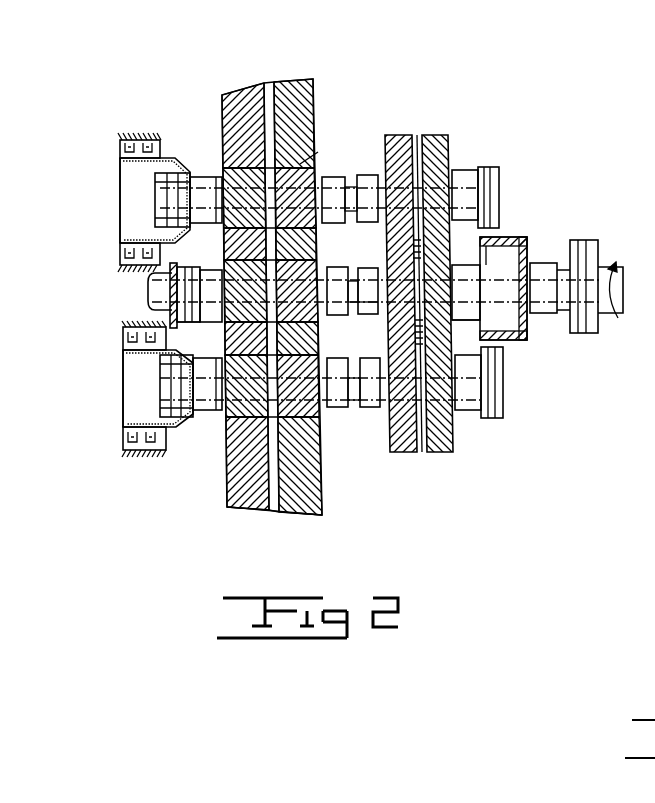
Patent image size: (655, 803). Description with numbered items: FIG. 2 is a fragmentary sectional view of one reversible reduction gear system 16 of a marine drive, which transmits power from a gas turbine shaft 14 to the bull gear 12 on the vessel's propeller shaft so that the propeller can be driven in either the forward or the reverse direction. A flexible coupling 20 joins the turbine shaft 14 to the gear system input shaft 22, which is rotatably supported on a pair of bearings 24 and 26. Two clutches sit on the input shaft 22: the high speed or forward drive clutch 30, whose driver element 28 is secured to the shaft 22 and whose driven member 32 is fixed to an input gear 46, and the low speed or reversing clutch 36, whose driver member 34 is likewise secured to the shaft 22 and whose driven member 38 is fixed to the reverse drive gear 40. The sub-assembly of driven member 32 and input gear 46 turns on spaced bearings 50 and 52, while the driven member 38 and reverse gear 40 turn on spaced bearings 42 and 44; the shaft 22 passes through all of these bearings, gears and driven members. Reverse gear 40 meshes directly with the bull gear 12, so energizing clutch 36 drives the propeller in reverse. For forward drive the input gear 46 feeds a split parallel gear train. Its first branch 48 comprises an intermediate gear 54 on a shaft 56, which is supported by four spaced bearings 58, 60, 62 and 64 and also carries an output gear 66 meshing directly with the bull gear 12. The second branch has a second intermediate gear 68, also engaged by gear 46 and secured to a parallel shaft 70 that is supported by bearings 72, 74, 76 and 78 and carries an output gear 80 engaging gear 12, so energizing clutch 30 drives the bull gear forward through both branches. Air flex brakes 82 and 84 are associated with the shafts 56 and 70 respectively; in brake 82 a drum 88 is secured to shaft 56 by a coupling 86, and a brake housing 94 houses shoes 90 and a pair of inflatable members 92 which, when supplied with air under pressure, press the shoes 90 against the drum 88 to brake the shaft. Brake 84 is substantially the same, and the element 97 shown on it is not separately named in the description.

The bull gear 12 is at (316, 95).
The gas turbine shaft 14 is at (619, 272).
The gear system 16 is at (368, 77).
The flexible coupling 20 is at (578, 240).
The gear system input shaft 22 is at (360, 268).
The bearing 24 is at (150, 290).
The bearing 26 is at (546, 314).
The driver element 28 is at (544, 263).
The high speed gear system clutch 30 is at (523, 347).
The driven member 32 is at (500, 240).
The driver member 34 is at (198, 324).
The low speed or reversing clutch 36 is at (186, 262).
The driven member 38 is at (170, 303).
The reverse drive gear 40 is at (332, 316).
The bearing 42 is at (205, 276).
The bearing 44 is at (334, 267).
The input gear 46 is at (456, 265).
The first branch of split parallel gear train 48 is at (476, 148).
The bearing 50 is at (366, 316).
The bearing 52 is at (462, 320).
The intermediate gear 54 is at (418, 135).
The shaft 56 is at (363, 175).
The bearing 58 is at (208, 177).
The bearing 60 is at (334, 177).
The bearing 62 is at (368, 222).
The bearing 64 is at (462, 178).
The output gear 66 is at (300, 164).
The second intermediate gear 68 is at (438, 453).
The shaft 70 is at (354, 402).
The bearing 72 is at (210, 412).
The bearing 74 is at (330, 410).
The bearing 76 is at (366, 410).
The bearing 78 is at (470, 412).
The output gear 80 is at (324, 490).
The air flex brake 82 is at (109, 126).
The air flex brake 84 is at (147, 463).
The coupling 86 is at (160, 200).
The drum 88 is at (172, 158).
The shoes 90 is at (120, 181).
The inflatable members 92 is at (142, 140).
The brake housing 94 is at (156, 140).
The coil 97 is at (125, 450).